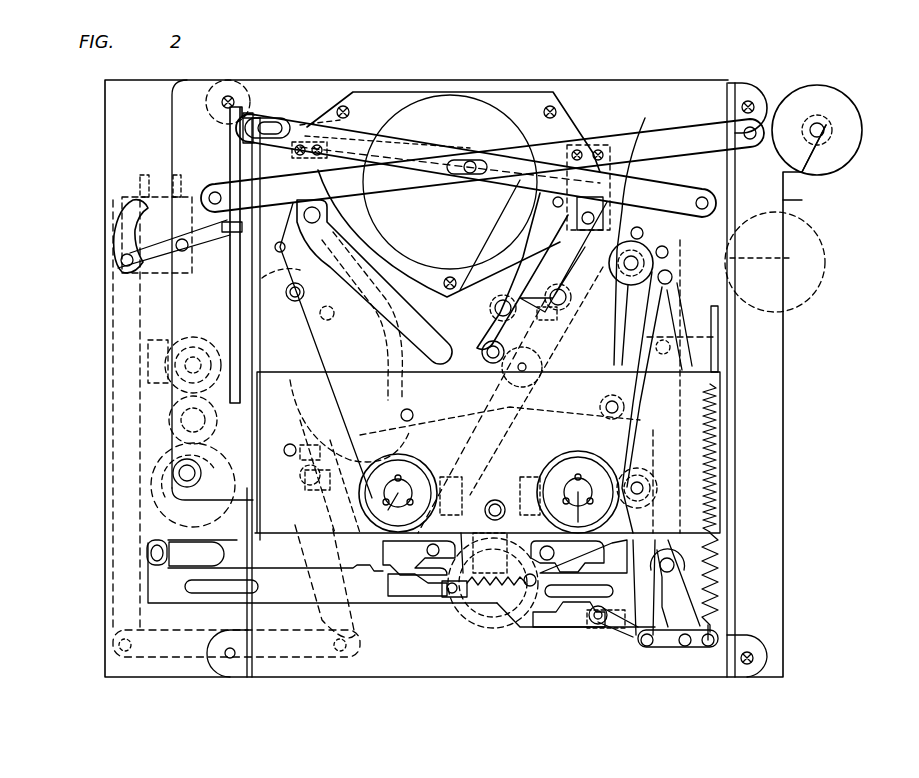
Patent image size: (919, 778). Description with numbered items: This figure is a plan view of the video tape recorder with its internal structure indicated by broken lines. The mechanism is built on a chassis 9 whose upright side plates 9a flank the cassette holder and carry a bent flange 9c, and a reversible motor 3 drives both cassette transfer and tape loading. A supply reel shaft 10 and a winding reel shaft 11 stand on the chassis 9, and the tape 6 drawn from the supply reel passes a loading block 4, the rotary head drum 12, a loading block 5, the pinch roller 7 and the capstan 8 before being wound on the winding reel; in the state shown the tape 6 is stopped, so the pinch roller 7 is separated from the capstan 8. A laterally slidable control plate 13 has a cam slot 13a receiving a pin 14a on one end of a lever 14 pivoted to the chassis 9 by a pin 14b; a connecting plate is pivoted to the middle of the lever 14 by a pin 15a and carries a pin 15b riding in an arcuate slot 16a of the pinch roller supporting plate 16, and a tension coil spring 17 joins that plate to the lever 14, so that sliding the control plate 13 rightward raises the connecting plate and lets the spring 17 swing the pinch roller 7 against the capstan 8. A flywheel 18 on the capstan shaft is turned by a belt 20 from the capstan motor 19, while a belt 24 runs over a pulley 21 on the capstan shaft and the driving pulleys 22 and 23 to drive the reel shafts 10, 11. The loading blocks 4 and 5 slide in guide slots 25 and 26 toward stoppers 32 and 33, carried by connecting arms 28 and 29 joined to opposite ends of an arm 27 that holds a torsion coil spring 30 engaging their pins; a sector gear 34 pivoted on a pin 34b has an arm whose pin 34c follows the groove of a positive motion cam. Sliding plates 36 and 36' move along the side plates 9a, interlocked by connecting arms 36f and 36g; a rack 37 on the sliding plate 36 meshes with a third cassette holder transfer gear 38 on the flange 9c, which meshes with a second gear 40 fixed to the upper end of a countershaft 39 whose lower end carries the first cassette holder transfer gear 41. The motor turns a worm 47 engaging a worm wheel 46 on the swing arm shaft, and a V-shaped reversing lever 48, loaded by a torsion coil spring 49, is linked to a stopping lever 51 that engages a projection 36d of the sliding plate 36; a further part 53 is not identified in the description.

The reversible motor 3 is at (160, 185).
The loading block 4 is at (282, 167).
The loading block 5 is at (602, 145).
The tape 6 is at (690, 332).
The pinch roller 7 is at (599, 235).
The capstan 8 is at (688, 269).
The chassis 9 is at (772, 466).
The upright side plate 9a is at (248, 615).
The flange of side plate 9c is at (172, 135).
The supply reel shaft 10 is at (380, 538).
The winding reel shaft 11 is at (576, 633).
The rotary head drum 12 is at (457, 103).
The control plate 13 is at (302, 595).
The cam slot 13a is at (548, 622).
The lever 14 is at (668, 648).
The pin 14a is at (600, 625).
The pin 14b is at (710, 648).
The pin 15a is at (650, 648).
The pin 15b is at (705, 385).
The pinch roller supporting plate 16 is at (668, 317).
The arcuate slot 16a is at (668, 356).
The tension coil spring 17 is at (725, 562).
The flywheel 18 is at (800, 199).
The capstan motor 19 is at (855, 117).
The belt 20 is at (790, 212).
The pulley 21 is at (775, 262).
The driving pulley 22 is at (490, 630).
The driving pulley 23 is at (720, 486).
The belt 24 is at (578, 479).
The guide slot 25 is at (372, 258).
The guide slot 26 is at (530, 280).
The arm 27 is at (442, 275).
The connecting arm 28 is at (317, 350).
The connecting arm 29 is at (615, 275).
The torsion coil spring 30 is at (495, 273).
The stopper 32 is at (300, 140).
The stopper 33 is at (546, 90).
The sector gear 34 is at (499, 469).
The pin 34b is at (490, 487).
The pin 34c is at (351, 420).
The sliding plate 36 is at (280, 397).
The sliding plate 36' is at (544, 452).
The projection 36d is at (227, 230).
The connecting arm 36f is at (345, 130).
The connecting arm 36g is at (410, 160).
The rack 37 is at (230, 320).
The third cassette holder transfer gear 38 is at (165, 426).
The countershaft 39 is at (178, 475).
The second cassette holder transfer gear 40 is at (160, 464).
The first cassette holder transfer gear 41 is at (150, 506).
The worm wheel 46 is at (112, 373).
The worm 47 is at (150, 349).
The reversing lever 48 is at (283, 655).
The torsion coil spring 49 is at (365, 500).
The stopping lever 51 is at (130, 238).
The brake 53 is at (313, 467).